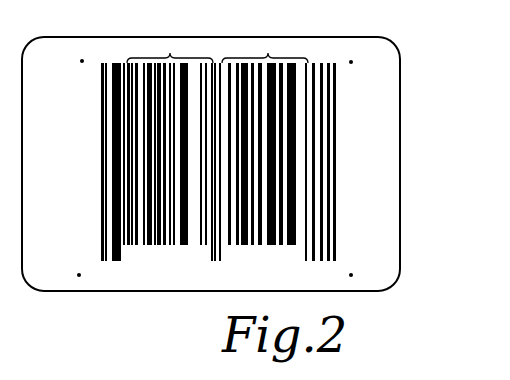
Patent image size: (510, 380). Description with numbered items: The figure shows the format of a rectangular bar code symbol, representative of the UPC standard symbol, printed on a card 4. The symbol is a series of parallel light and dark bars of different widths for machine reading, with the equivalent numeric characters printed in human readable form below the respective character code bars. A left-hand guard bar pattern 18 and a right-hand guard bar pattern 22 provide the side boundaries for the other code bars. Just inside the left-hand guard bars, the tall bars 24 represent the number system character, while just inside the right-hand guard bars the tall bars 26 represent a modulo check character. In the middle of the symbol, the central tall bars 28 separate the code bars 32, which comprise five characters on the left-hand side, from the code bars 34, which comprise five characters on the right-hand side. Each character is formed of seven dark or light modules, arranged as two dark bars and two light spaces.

The card 4 is at (385, 173).
The left-hand guard bar pattern 18 is at (103, 62).
The right-hand guard bar pattern 22 is at (335, 63).
The number system bars 24 is at (122, 262).
The modulo check bars 26 is at (313, 263).
The central tall bars 28 is at (213, 263).
The left-hand code bars 32 is at (170, 52).
The right-hand code bars 34 is at (268, 52).